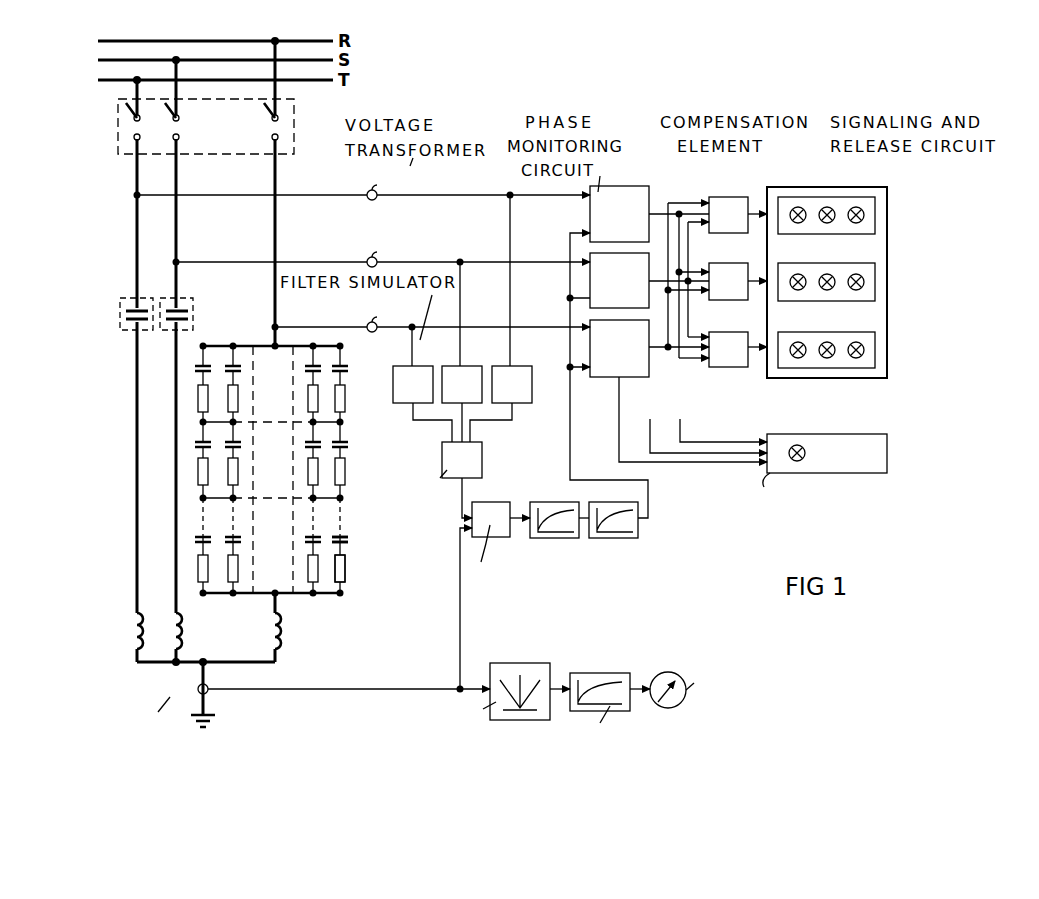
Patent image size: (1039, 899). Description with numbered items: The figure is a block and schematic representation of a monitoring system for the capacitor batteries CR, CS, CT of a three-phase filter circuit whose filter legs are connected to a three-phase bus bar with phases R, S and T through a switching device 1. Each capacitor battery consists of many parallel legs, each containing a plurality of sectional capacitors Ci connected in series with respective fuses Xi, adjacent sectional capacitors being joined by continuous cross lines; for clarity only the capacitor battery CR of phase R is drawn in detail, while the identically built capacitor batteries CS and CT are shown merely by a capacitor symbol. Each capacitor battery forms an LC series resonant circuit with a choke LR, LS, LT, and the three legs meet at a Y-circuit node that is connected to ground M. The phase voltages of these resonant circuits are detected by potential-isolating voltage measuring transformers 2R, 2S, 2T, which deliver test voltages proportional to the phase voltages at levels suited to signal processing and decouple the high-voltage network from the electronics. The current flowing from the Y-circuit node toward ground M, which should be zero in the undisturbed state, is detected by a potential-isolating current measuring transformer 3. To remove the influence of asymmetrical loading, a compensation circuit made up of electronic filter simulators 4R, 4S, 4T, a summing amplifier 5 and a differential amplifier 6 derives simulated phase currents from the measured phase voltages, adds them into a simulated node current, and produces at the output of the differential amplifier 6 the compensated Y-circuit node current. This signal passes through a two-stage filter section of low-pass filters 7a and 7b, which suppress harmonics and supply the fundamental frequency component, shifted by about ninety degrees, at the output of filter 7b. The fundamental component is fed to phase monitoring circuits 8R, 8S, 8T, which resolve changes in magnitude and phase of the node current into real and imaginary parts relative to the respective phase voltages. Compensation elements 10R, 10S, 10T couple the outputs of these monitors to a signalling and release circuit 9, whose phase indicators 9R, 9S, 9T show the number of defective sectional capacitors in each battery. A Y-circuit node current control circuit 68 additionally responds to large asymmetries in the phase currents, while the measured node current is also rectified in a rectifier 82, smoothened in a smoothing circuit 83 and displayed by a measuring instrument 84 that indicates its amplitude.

The switching device 1 is at (295, 122).
The potential-isolating voltage measuring transformer 2T is at (363, 184).
The potential-isolating voltage measuring transformer 2S is at (383, 251).
The potential-isolating voltage measuring transformer 2R is at (432, 316).
The potential-isolating current measuring transformer 3 is at (196, 690).
The electronic filter simulator 4R is at (410, 362).
The electronic filter simulator 4S is at (460, 362).
The electronic filter simulator 4T is at (509, 362).
The summing amplifier 5 is at (442, 460).
The differential amplifier 6 is at (489, 500).
The low-pass filter 7a is at (681, 560).
The low-pass filter 7b is at (600, 538).
The phase monitoring circuit 8T is at (619, 214).
The phase monitoring circuit 8S is at (619, 280).
The phase monitoring circuit 8R is at (619, 348).
The signalling and release circuit 9 is at (835, 162).
The phase indicator 9T is at (875, 213).
The phase indicator 9S is at (875, 280).
The phase indicator 9R is at (875, 348).
The compensation element 10T is at (748, 160).
The compensation element 10S is at (715, 265).
The compensation element 10R is at (715, 335).
The Y-circuit node current control circuit 68 is at (887, 452).
The rectifier 82 is at (506, 662).
The smoothing circuit 83 is at (583, 664).
The measuring instrument 84 is at (668, 666).
The capacitor battery CT is at (120, 298).
The capacitor battery CS is at (193, 298).
The capacitor battery CR is at (286, 411).
The sectional capacitor Ci is at (345, 536).
The fuse Xi is at (346, 570).
The choke LT is at (127, 633).
The choke LS is at (182, 635).
The choke LR is at (268, 645).
The ground M is at (212, 710).